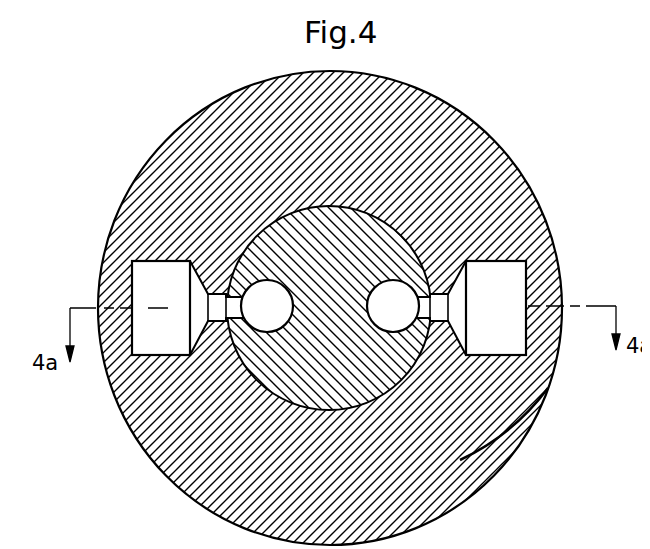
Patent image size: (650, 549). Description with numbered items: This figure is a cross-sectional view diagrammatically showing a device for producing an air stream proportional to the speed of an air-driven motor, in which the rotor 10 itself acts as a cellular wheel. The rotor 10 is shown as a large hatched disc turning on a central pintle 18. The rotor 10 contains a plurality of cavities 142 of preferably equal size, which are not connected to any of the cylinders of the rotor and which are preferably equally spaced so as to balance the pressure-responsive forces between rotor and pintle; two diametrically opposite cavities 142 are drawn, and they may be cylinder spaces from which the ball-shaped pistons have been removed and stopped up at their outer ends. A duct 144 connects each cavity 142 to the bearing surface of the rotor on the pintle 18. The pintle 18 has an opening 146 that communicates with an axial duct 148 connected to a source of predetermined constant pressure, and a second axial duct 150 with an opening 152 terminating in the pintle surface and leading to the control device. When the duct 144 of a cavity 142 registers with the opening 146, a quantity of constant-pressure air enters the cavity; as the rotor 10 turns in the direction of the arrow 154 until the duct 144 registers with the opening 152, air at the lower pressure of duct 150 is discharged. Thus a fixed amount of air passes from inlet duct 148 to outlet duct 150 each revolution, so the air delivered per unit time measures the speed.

The rotor 10 is at (490, 148).
The pintle 18 is at (329, 308).
The cavities 142 is at (563, 222).
The duct 144 is at (520, 266).
The opening 146 is at (423, 288).
The axial duct 148 is at (385, 310).
The axial duct 150 is at (248, 299).
The opening 152 is at (194, 274).
The arrow 154 is at (392, 60).